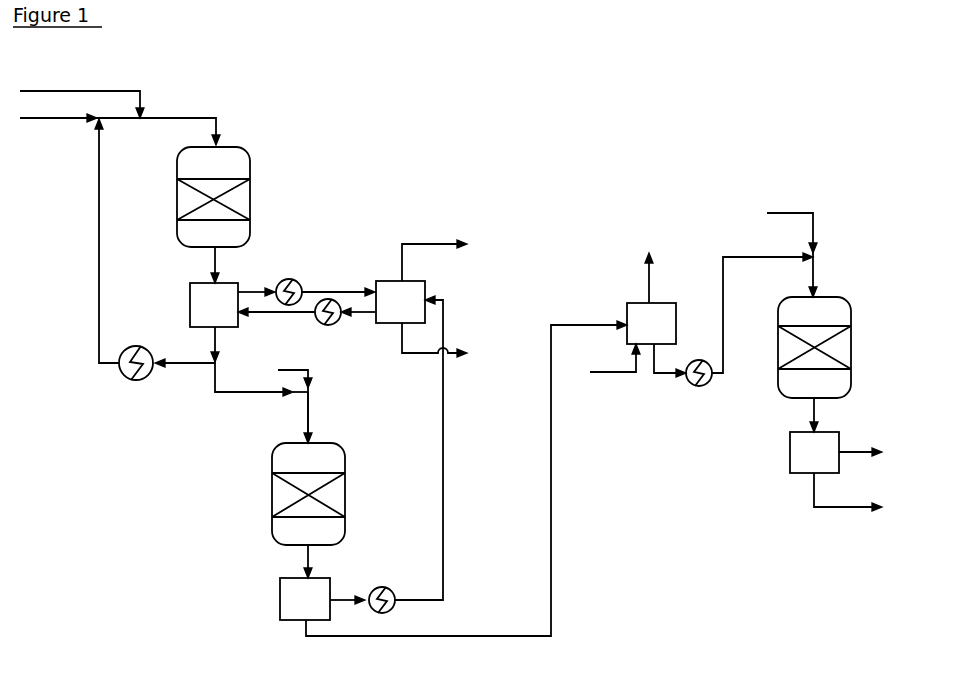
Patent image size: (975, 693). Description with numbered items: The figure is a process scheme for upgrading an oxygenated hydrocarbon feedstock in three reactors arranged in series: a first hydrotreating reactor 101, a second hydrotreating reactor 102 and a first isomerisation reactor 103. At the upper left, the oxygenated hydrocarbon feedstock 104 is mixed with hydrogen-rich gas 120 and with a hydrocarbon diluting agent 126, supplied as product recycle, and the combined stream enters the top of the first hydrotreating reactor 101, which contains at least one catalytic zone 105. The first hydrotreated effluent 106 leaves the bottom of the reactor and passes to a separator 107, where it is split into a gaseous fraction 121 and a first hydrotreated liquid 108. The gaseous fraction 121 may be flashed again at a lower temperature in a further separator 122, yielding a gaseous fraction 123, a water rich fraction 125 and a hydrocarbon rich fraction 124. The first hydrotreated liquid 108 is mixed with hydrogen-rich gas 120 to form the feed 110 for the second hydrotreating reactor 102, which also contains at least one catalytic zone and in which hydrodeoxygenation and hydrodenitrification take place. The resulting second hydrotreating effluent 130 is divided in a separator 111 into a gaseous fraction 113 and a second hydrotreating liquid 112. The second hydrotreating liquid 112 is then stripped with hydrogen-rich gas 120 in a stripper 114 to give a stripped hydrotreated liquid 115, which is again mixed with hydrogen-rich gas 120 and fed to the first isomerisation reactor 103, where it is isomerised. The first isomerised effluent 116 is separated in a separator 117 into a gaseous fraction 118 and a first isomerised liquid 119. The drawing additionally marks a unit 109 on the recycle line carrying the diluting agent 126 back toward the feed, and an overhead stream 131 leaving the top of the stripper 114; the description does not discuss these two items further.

The first hydrotreating reactor 101 is at (250, 162).
The second hydrotreating reactor 102 is at (345, 460).
The first isomerisation reactor 103 is at (851, 312).
The oxygenated hydrocarbon feedstock 104 is at (65, 118).
The catalytic zone 105 is at (250, 200).
The first hydrotreated effluent 106 is at (210, 263).
The separator 107 is at (227, 313).
The first hydrotreated liquid 108 is at (210, 340).
The heat exchanger 109 is at (133, 381).
The feed for the second hydrotreating reactor 110 is at (312, 425).
The separator 111 is at (318, 607).
The second hydrotreating liquid 112 is at (462, 636).
The gaseous fraction 113 is at (443, 543).
The stripper 114 is at (664, 332).
The stripped hydrotreated liquid 115 is at (762, 257).
The first isomerised effluent 116 is at (805, 410).
The separator 117 is at (827, 460).
The gaseous fraction 118 is at (862, 452).
The first isomerised liquid 119 is at (810, 495).
The hydrogen-rich gas 120 is at (62, 91).
The gaseous fraction 121 is at (256, 291).
The separator 122 is at (413, 310).
The gaseous fraction 123 is at (445, 244).
The hydrocarbon rich fraction 124 is at (365, 318).
The water rich fraction 125 is at (425, 353).
The hydrocarbon diluting agent 126 is at (99, 245).
The second hydrotreating effluent 130 is at (303, 565).
The gas stream 131 is at (647, 280).